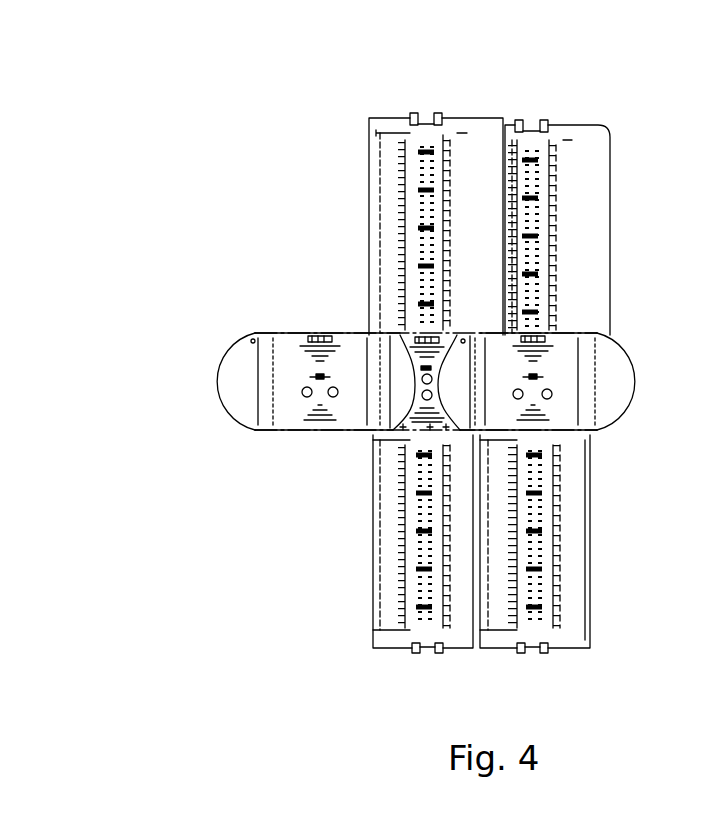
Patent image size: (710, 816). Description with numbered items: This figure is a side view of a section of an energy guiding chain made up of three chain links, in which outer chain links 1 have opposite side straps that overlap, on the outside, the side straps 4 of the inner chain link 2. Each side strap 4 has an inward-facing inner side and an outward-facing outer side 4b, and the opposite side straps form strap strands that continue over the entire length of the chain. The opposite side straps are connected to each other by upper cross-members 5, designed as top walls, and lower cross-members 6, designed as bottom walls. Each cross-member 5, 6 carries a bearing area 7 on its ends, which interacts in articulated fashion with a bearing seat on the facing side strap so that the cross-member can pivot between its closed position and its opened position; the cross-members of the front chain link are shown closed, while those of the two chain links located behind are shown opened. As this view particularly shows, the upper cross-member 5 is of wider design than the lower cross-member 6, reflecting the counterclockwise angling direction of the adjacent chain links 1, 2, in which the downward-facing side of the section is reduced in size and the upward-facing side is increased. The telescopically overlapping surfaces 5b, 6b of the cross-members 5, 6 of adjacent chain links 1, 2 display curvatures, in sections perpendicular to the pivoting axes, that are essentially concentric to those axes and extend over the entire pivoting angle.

The outer chain link 1 is at (255, 433).
The inner chain link 2 is at (402, 426).
The side strap 4 is at (292, 350).
The outer side 4b is at (230, 375).
The upper cross-member 5 is at (367, 166).
The telescopically overlapping surface 5b is at (388, 208).
The lower cross-member 6 is at (370, 617).
The telescopically overlapping surface 6b is at (387, 568).
The bearing area 7 is at (426, 110).